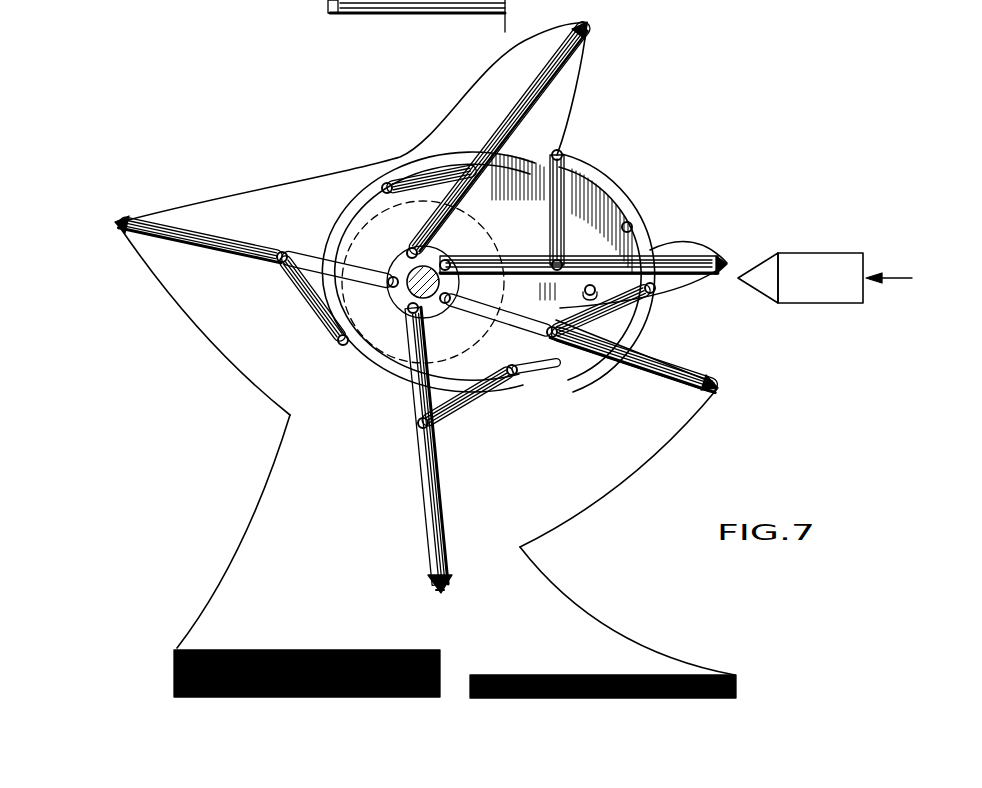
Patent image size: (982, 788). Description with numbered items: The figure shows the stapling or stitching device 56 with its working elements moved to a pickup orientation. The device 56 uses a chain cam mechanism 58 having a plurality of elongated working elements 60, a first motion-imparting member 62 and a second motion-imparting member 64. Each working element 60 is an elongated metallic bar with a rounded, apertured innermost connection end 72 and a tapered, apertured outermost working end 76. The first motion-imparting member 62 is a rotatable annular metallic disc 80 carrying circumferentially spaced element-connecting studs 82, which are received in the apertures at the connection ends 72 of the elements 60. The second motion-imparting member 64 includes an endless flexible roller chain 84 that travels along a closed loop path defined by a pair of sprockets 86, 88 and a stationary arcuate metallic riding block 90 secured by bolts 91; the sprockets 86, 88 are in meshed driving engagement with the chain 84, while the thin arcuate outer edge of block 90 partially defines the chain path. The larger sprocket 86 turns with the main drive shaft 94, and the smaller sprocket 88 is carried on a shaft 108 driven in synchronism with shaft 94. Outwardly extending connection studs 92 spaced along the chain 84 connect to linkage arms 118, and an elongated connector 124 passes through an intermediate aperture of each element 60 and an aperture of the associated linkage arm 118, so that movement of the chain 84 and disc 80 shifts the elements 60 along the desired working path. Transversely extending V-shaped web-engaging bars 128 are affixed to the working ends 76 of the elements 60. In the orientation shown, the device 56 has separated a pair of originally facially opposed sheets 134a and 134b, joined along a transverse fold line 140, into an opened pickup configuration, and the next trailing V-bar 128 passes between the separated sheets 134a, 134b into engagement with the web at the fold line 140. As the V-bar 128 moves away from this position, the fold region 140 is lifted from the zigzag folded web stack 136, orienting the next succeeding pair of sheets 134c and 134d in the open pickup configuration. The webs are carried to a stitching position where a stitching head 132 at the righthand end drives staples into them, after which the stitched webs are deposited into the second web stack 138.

The stapling or stitching device 56 is at (730, 110).
The chain cam mechanism 58 is at (582, 130).
The working elements 60 is at (405, 510).
The first motion-imparting member 62 is at (376, 350).
The second motion-imparting member 64 is at (337, 197).
The innermost connection end 72 is at (432, 300).
The outermost working end 76 is at (430, 578).
The annular metallic disc 80 is at (402, 255).
The element-connecting studs 82 is at (410, 250).
The roller chain 84 is at (560, 363).
The sprocket 86 is at (397, 360).
The sprocket 88 is at (650, 326).
The arcuate metallic riding block 90 is at (583, 192).
The bolts 91 is at (632, 226).
The connection studs 92 is at (512, 375).
The main drive shaft 94 is at (390, 290).
The shaft 108 is at (585, 291).
The linkage arm 118 is at (470, 400).
The connector 124 is at (418, 422).
The web-engaging V-bars 128 is at (446, 586).
The stitching head 132 is at (818, 255).
The sheet 134a is at (230, 187).
The sheet 134b is at (188, 321).
The sheet 134c is at (257, 512).
The sheet 134d is at (325, 646).
The web stack 136 is at (168, 667).
The second web stack 138 is at (750, 677).
The transverse fold line 140 is at (117, 223).